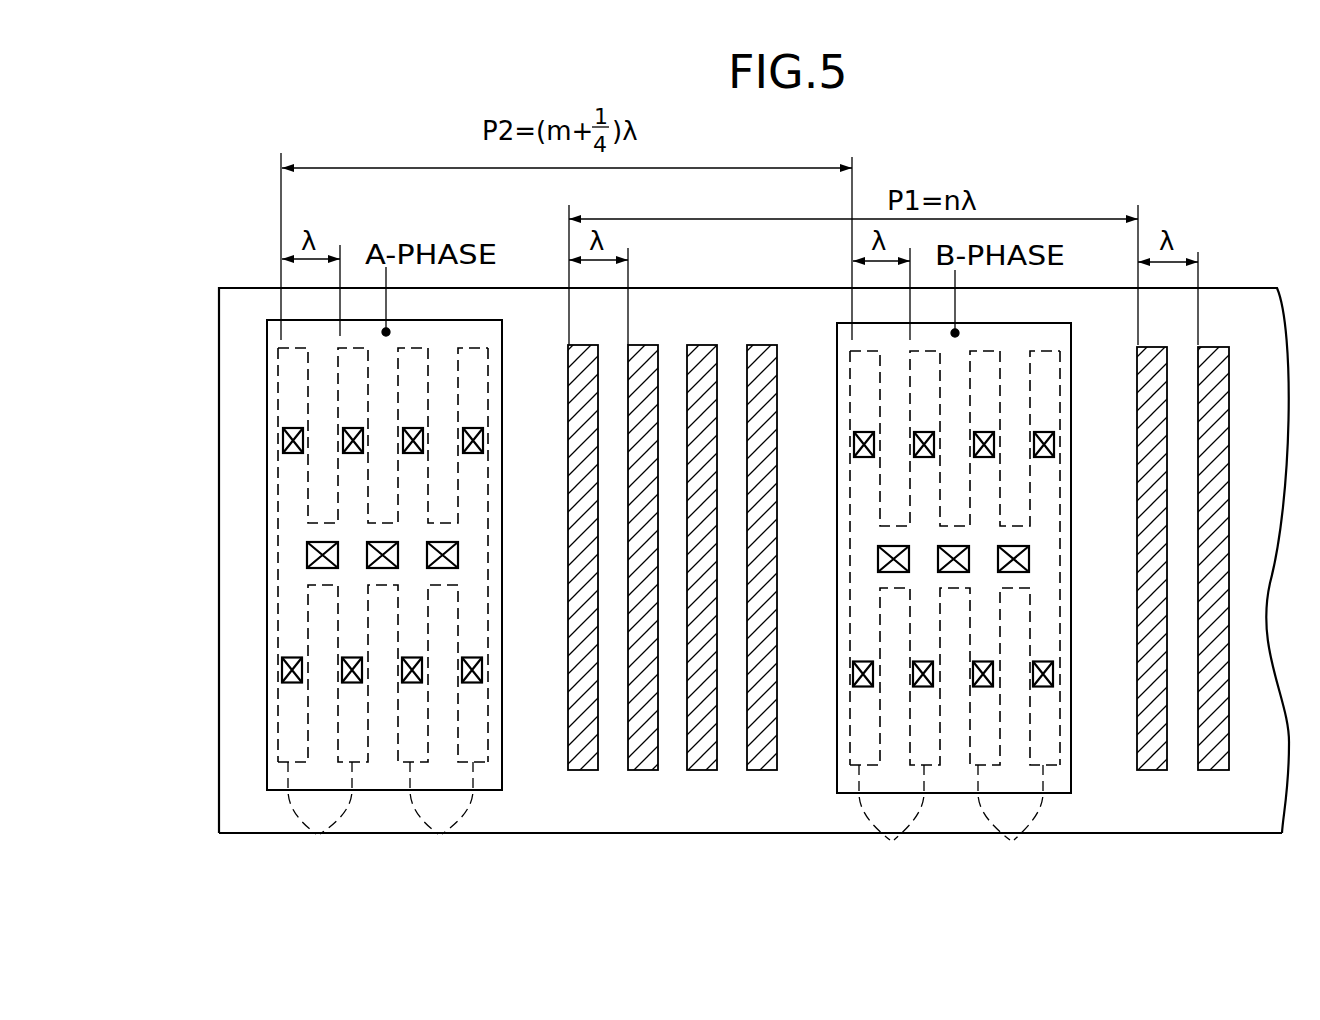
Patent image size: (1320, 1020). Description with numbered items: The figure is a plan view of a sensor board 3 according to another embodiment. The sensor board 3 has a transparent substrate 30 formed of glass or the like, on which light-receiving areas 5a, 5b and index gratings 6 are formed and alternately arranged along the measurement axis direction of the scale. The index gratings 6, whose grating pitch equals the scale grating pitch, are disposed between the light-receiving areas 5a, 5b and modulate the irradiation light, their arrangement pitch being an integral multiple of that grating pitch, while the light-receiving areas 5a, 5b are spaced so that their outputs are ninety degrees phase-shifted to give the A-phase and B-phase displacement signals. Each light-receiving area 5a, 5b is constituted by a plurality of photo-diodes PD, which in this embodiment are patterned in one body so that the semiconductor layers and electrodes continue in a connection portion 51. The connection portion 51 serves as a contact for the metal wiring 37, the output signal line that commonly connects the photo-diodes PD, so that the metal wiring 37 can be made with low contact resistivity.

The sensor board 3 is at (572, 870).
The transparent substrate 30 is at (1200, 808).
The index gratings 6 is at (718, 298).
The metal wiring 37 is at (268, 604).
The connection portion 51 is at (327, 523).
The light-receiving area 5a is at (385, 778).
The light-receiving area 5b is at (960, 782).
The photo-diode PD is at (318, 826).